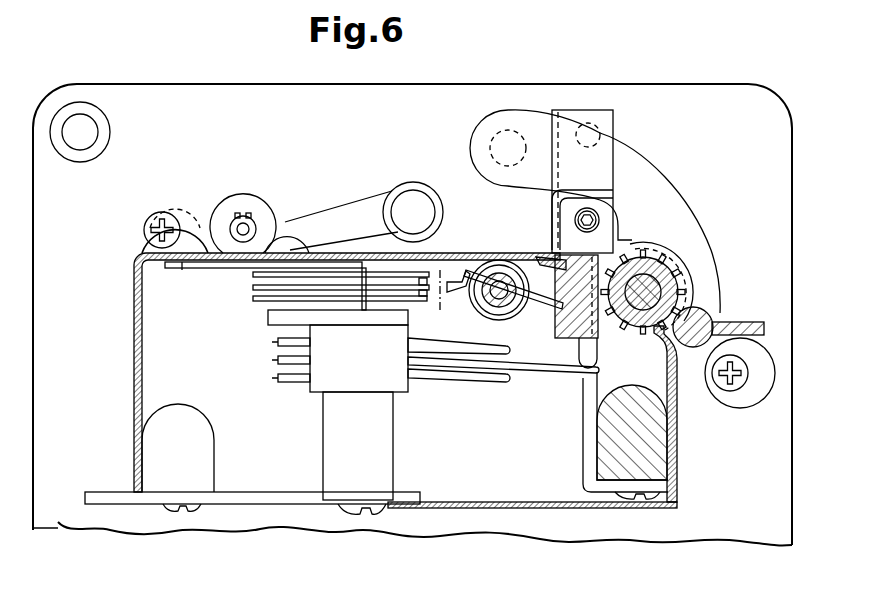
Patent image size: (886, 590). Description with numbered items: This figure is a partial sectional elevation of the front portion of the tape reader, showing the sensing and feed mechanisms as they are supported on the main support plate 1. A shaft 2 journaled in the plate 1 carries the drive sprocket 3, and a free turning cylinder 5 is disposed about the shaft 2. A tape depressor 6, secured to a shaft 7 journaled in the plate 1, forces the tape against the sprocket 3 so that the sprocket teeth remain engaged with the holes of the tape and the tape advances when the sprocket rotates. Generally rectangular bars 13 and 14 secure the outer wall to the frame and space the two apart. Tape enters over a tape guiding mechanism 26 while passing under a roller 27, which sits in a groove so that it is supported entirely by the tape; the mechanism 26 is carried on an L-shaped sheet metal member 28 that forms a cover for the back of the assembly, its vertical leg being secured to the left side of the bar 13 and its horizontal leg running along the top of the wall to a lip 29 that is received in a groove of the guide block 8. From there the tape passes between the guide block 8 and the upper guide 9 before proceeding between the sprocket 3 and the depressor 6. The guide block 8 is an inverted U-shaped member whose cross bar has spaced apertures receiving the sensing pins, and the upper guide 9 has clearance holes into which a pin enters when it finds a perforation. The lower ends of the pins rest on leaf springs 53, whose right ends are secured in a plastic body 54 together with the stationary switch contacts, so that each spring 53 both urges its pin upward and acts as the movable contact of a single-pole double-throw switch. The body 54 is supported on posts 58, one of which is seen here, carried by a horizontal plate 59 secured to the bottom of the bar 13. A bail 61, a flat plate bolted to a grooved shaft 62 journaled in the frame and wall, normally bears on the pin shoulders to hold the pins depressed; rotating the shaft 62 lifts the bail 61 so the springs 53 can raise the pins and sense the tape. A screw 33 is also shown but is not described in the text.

The main support plate 1 is at (58, 520).
The shaft 2 is at (636, 297).
The drive sprocket 3 is at (690, 258).
The free turning cylinder 5 is at (123, 238).
The tape depressor 6 is at (682, 217).
The shaft 7 is at (638, 180).
The guide block 8 is at (571, 427).
The upper guide 9 is at (556, 212).
The rectangular bar 13 is at (193, 442).
The rectangular bar 14 is at (648, 462).
The tape guiding mechanism 26 is at (285, 242).
The roller 27 is at (238, 212).
The L-shaped sheet metal member 28 is at (136, 345).
The lip 29 is at (545, 259).
The screw 33 is at (172, 200).
The leaf spring 53 is at (528, 363).
The plastic body 54 is at (320, 382).
The post 58 is at (380, 440).
The horizontal plate 59 is at (250, 502).
The bail 61 is at (540, 306).
The shaft 62 is at (490, 300).